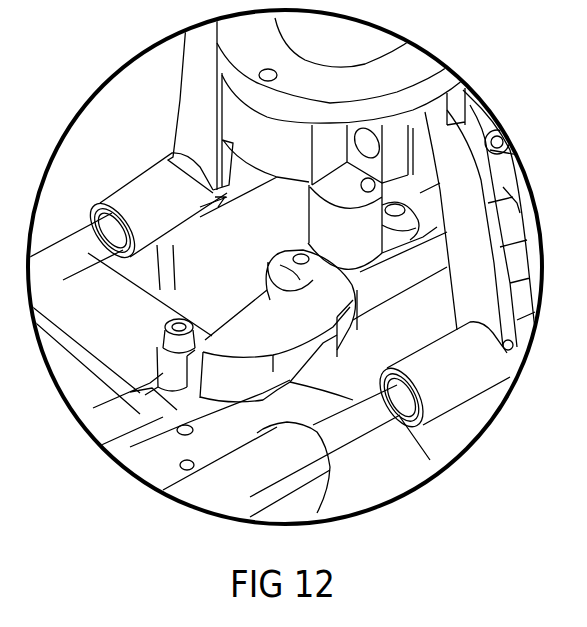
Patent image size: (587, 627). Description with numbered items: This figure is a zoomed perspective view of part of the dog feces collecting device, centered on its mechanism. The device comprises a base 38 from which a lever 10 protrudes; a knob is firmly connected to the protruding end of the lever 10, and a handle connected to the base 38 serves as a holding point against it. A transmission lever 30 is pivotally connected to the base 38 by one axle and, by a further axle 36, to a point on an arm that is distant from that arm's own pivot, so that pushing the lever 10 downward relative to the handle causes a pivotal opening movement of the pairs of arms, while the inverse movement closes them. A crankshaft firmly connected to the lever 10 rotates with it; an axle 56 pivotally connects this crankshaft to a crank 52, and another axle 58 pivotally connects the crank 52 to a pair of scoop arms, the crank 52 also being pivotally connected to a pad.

The lever 10 is at (361, 245).
The transmission lever 30 is at (487, 271).
The axle 36 is at (352, 420).
The base 38 is at (281, 151).
The crank 52 is at (278, 317).
The axle 56 is at (300, 256).
The axle 58 is at (174, 324).